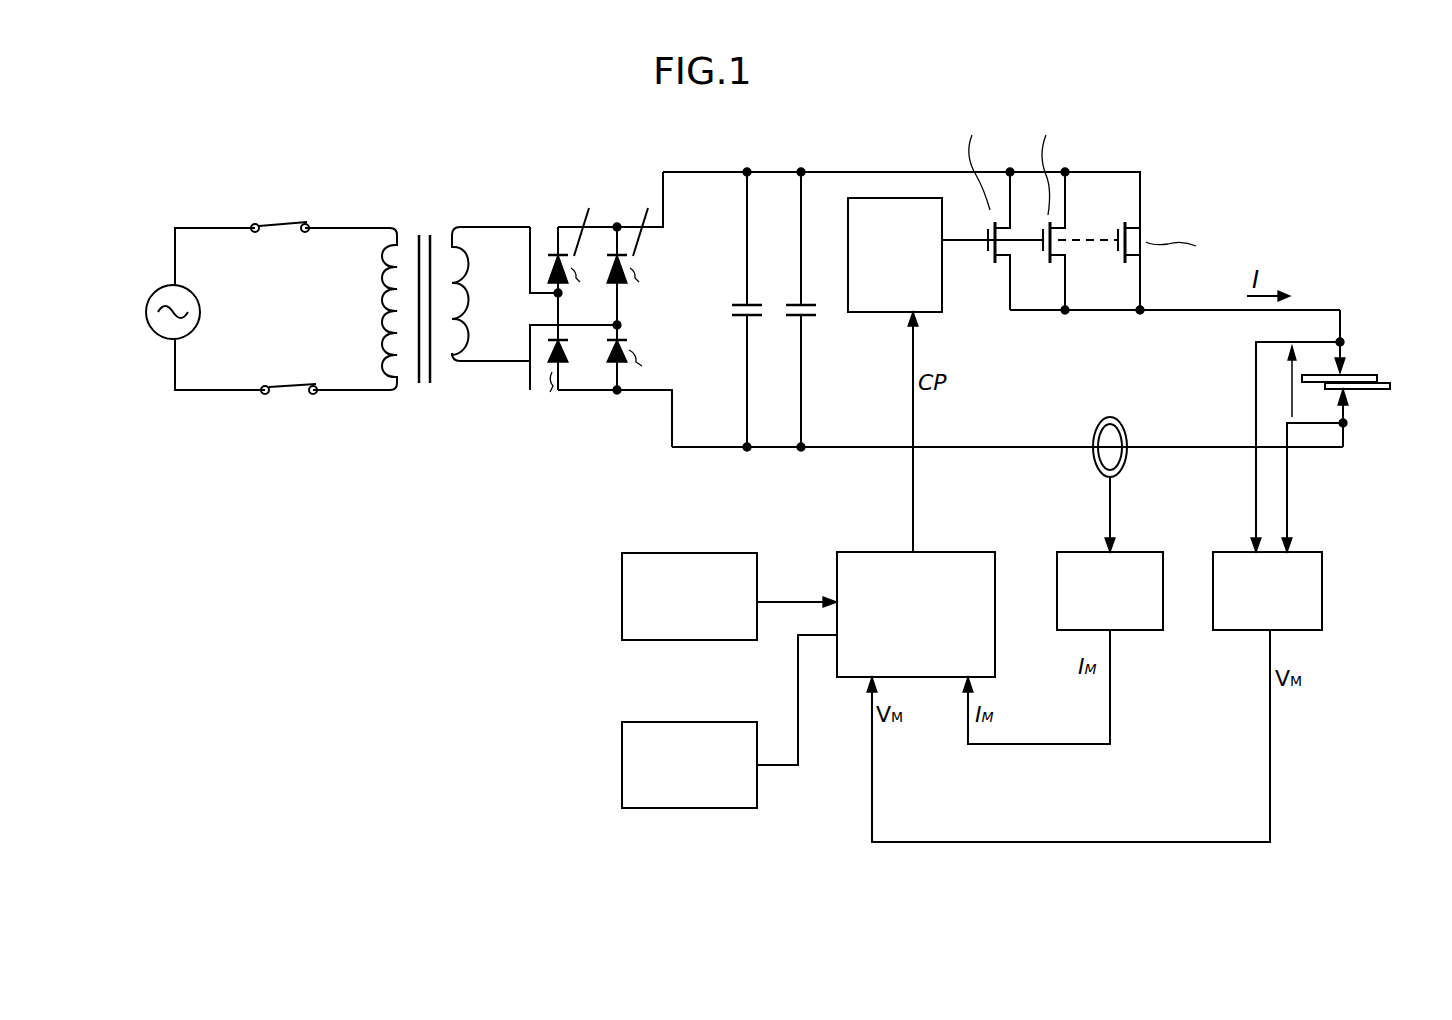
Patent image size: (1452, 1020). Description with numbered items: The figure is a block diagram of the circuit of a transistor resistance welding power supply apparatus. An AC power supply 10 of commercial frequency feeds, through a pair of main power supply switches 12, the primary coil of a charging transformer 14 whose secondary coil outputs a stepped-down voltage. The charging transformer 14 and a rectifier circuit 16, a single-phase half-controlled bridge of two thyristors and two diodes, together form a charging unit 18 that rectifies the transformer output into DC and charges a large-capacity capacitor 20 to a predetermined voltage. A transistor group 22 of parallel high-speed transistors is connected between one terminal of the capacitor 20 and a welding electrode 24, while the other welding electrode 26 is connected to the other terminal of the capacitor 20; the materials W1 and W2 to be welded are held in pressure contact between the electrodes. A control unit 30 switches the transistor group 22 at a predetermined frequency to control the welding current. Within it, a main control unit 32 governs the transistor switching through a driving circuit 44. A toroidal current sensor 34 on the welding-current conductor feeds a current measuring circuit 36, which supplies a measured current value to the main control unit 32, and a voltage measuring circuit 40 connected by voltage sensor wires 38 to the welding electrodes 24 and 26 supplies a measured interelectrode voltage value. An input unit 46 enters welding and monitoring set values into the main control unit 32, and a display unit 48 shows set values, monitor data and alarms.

The AC power supply 10 is at (190, 297).
The main power supply switches 12 is at (279, 222).
The charging transformer 14 is at (418, 228).
The rectifier circuit 16 is at (586, 370).
The charging unit 18 is at (495, 198).
The capacitor 20 is at (787, 294).
The transistor group 22 is at (1157, 192).
The welding electrode 24 is at (1348, 352).
The welding electrode 26 is at (1352, 410).
The control unit 30 is at (806, 870).
The main control unit 32 is at (949, 552).
The current sensor 34 is at (1128, 460).
The current measuring circuit 36 is at (1078, 552).
The voltage sensor wires 38 is at (1291, 498).
The voltage measuring circuit 40 is at (1322, 588).
The driving circuit 44 is at (898, 198).
The input unit 46 is at (622, 584).
The display unit 48 is at (622, 760).
The material to be welded W1 is at (1368, 370).
The material to be welded W2 is at (1374, 390).